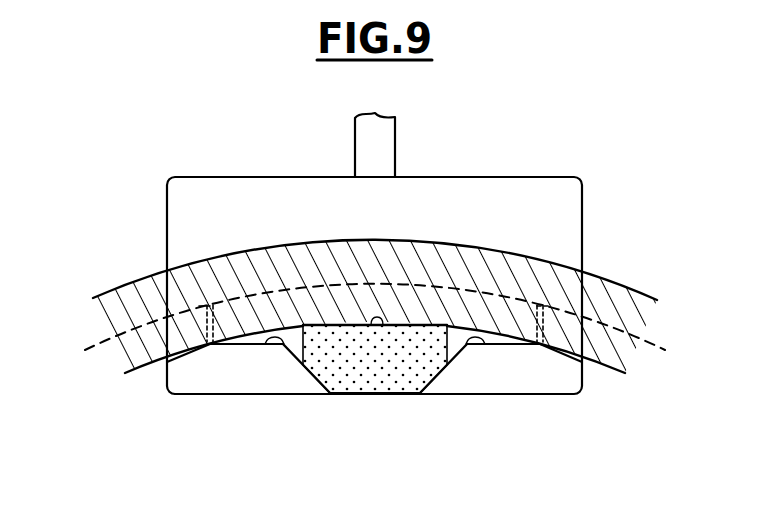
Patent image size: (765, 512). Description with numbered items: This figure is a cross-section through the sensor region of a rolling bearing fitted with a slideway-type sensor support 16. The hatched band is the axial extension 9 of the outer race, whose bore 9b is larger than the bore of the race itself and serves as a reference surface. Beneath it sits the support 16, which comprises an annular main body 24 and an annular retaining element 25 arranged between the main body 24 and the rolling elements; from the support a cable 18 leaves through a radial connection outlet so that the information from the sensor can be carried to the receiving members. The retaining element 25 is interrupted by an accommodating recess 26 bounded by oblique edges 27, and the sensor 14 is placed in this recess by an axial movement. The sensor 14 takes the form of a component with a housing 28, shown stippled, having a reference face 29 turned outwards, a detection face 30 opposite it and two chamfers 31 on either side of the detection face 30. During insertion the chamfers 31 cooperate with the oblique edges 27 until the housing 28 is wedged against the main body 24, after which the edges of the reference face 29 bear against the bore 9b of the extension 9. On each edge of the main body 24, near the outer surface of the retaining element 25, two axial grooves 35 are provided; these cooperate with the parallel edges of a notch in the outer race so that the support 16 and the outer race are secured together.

The axial extension 9 is at (598, 340).
The bore 9b is at (503, 334).
The sensor 14 is at (345, 318).
The support 16 is at (160, 196).
The cable 18 is at (380, 148).
The main body 24 is at (537, 203).
The retaining element 25 is at (212, 373).
The accommodating recess 26 is at (289, 346).
The oblique edges 27 is at (260, 344).
The housing 28 is at (337, 362).
The reference face 29 is at (380, 324).
The detection face 30 is at (372, 396).
The chamfers 31 is at (310, 378).
The axial grooves 35 is at (207, 303).